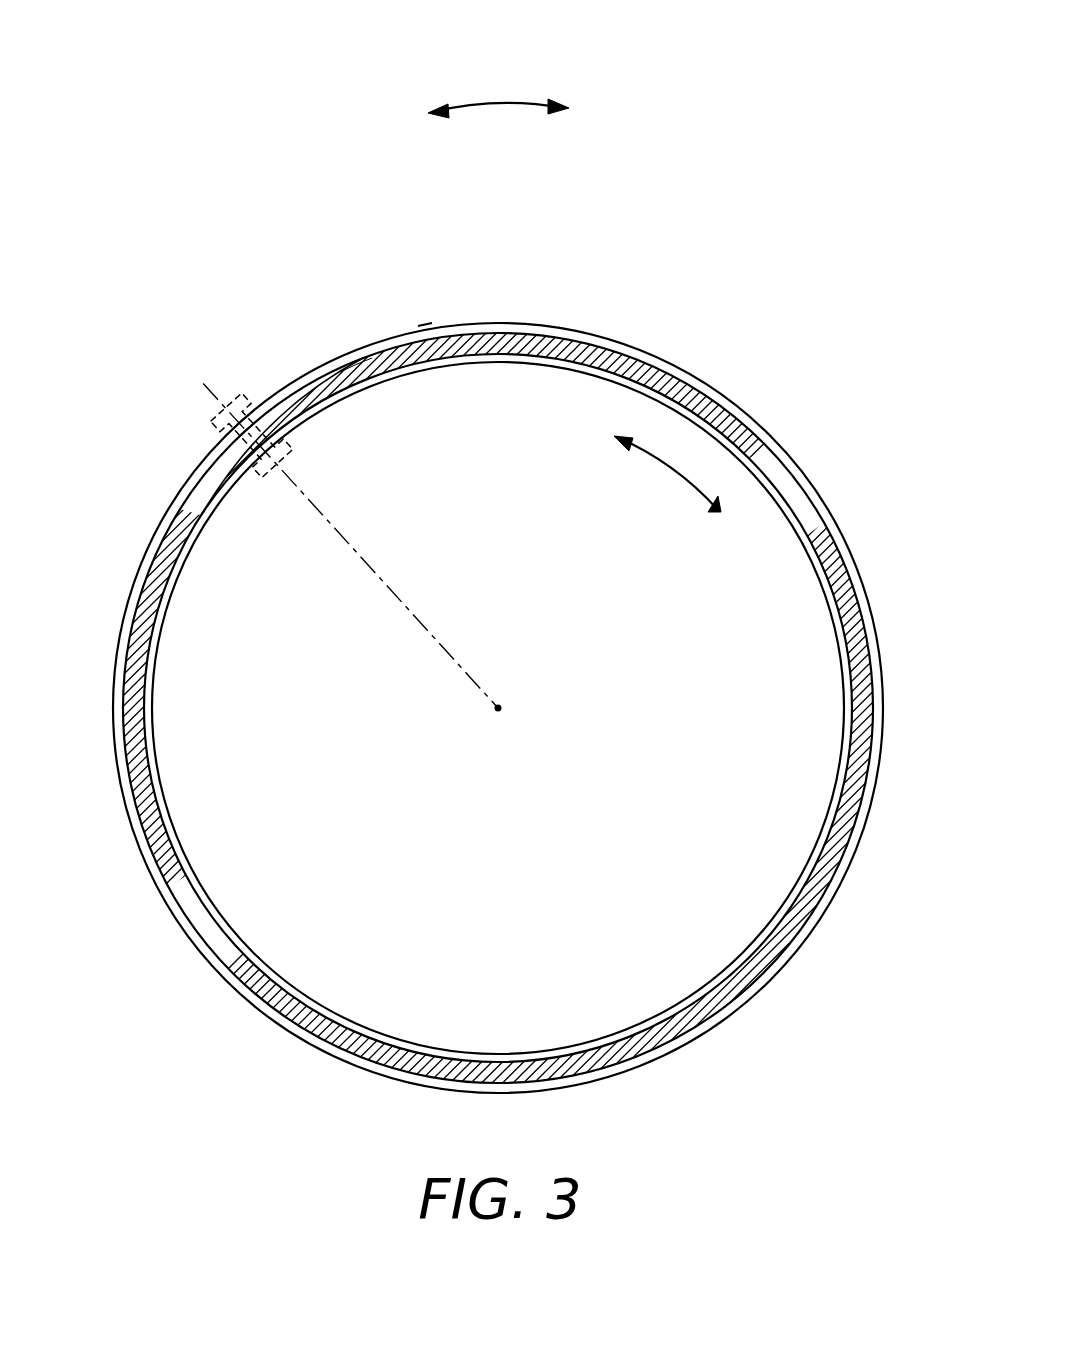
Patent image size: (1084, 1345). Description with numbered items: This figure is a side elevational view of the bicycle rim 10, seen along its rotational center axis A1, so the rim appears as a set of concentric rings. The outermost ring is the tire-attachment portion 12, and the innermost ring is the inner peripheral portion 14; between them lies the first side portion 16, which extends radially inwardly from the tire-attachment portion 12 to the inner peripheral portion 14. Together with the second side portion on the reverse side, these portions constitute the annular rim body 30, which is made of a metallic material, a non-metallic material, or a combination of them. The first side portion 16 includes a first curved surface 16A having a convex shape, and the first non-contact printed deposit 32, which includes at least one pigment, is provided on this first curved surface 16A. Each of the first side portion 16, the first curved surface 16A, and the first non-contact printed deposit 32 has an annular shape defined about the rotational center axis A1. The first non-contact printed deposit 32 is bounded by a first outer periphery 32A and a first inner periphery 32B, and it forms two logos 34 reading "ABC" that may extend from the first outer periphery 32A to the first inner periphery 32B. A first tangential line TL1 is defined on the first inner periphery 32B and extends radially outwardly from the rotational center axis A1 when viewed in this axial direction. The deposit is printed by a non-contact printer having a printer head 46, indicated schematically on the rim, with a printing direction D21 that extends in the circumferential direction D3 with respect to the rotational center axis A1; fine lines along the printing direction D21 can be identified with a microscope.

The bicycle rim 10 is at (726, 256).
The tire-attachment portion 12 is at (592, 327).
The inner peripheral portion 14 is at (540, 363).
The first side portion 16 is at (447, 348).
The first curved surface 16A is at (424, 330).
The annular rim body 30 is at (635, 240).
The first non-contact printed deposit 32 is at (400, 357).
The first outer periphery 32A is at (356, 356).
The first inner periphery 32B is at (361, 388).
The logo 34 is at (803, 473).
The printer head 46 is at (262, 386).
The rotational center axis A1 is at (502, 708).
The first tangential line TL1 is at (404, 595).
The circumferential direction D3 is at (503, 103).
The printing direction D21 is at (657, 478).